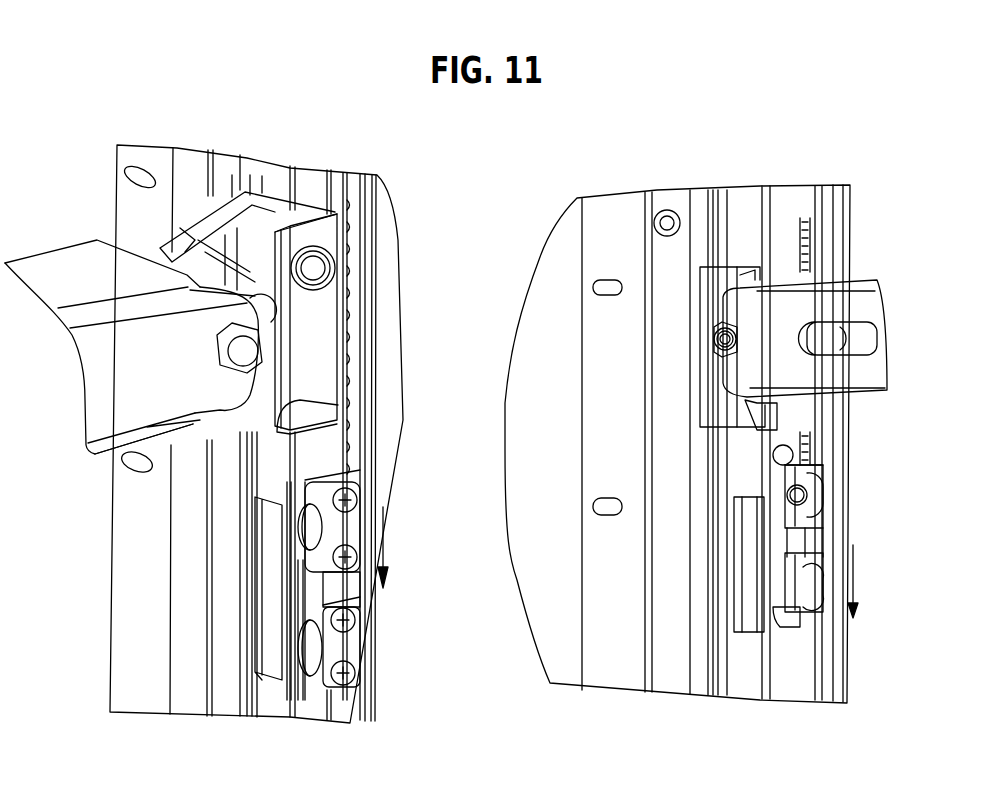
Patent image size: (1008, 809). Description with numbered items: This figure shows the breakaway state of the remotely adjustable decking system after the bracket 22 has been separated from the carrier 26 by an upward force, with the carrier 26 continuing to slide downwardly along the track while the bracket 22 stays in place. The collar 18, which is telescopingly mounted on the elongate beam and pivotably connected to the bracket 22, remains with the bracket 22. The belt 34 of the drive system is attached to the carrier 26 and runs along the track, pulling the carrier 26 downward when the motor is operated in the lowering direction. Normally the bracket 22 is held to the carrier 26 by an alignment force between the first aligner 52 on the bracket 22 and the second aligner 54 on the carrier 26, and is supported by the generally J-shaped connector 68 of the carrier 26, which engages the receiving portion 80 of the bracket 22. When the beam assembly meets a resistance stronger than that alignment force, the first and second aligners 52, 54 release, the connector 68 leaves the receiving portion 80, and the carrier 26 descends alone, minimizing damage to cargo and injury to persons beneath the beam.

The collar 18 is at (115, 332).
The bracket 22 is at (325, 214).
The carrier 26 is at (815, 543).
The belt 34 is at (348, 368).
The first aligner 52 is at (313, 267).
The second aligner 54 is at (790, 473).
The connector 68 is at (793, 622).
The receiving portion 80 is at (280, 402).